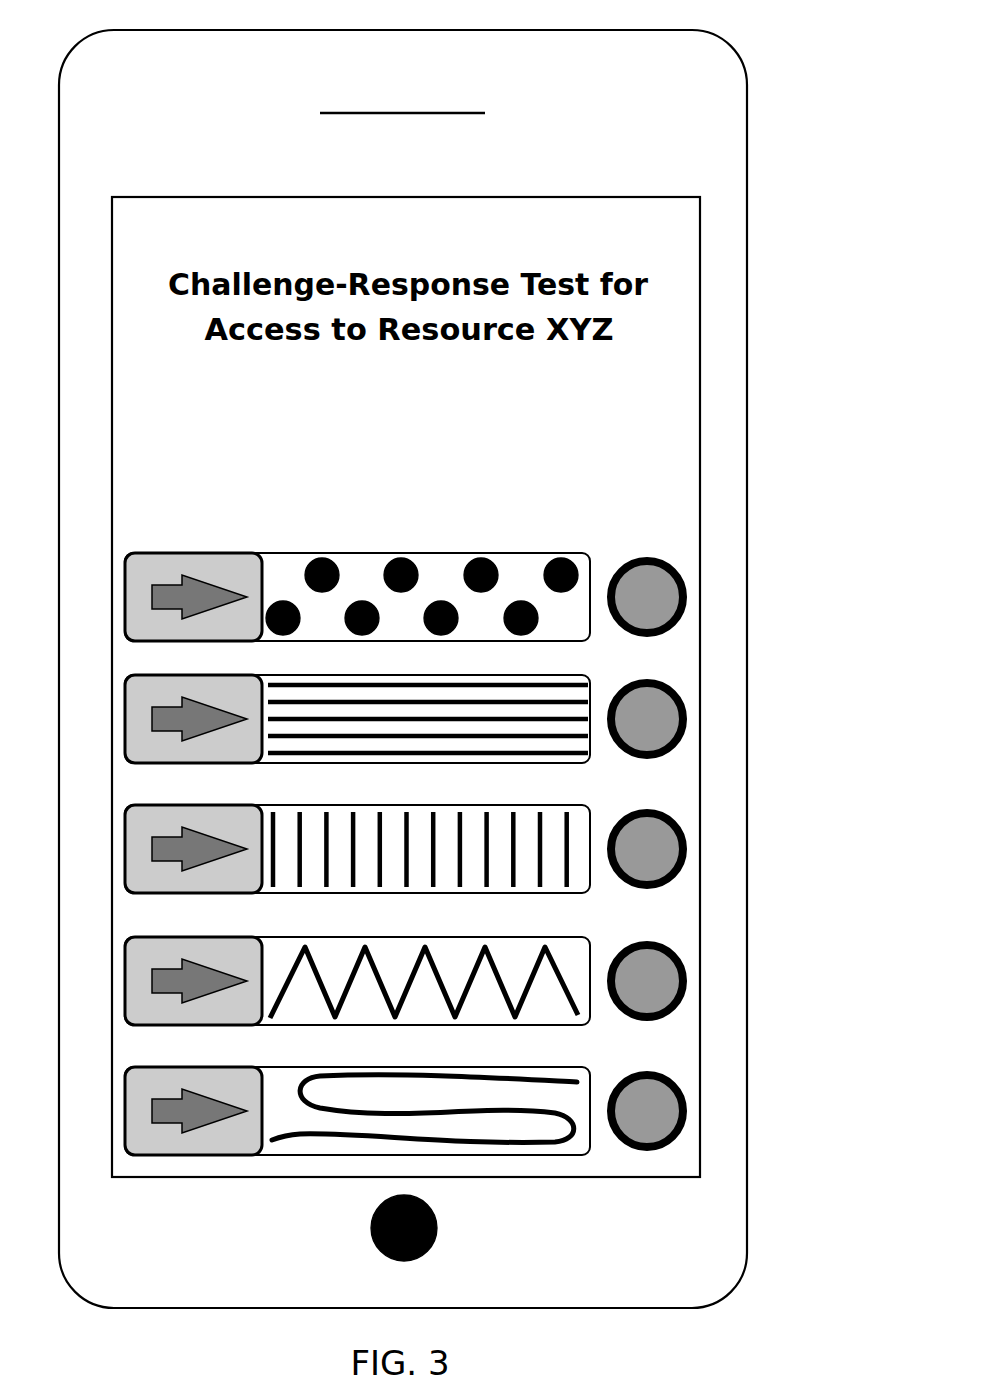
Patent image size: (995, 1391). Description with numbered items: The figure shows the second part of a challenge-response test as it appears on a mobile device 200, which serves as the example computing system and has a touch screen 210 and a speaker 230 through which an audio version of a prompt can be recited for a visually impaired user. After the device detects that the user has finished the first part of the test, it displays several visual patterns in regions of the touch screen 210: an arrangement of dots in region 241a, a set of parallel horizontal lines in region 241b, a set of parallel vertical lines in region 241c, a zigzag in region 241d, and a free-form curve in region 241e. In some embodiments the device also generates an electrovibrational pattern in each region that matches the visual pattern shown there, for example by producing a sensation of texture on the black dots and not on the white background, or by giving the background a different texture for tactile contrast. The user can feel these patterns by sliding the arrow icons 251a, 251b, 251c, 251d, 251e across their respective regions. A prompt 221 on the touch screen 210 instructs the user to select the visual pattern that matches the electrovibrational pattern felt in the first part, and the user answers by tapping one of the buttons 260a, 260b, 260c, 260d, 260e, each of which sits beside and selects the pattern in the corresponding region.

The mobile device 200 is at (724, 38).
The touch screen 210 is at (700, 197).
The prompt 221 is at (648, 378).
The speaker 230 is at (470, 113).
The region 241a is at (516, 556).
The region 241b is at (516, 679).
The region 241c is at (516, 808).
The region 241d is at (516, 939).
The region 241e is at (516, 1073).
The arrow icon 251a is at (284, 546).
The arrow icon 251b is at (284, 666).
The arrow icon 251c is at (284, 793).
The arrow icon 251d is at (284, 926).
The arrow icon 251e is at (284, 1056).
The button 260a is at (624, 560).
The button 260b is at (624, 690).
The button 260c is at (624, 822).
The button 260d is at (624, 953).
The button 260e is at (624, 1083).